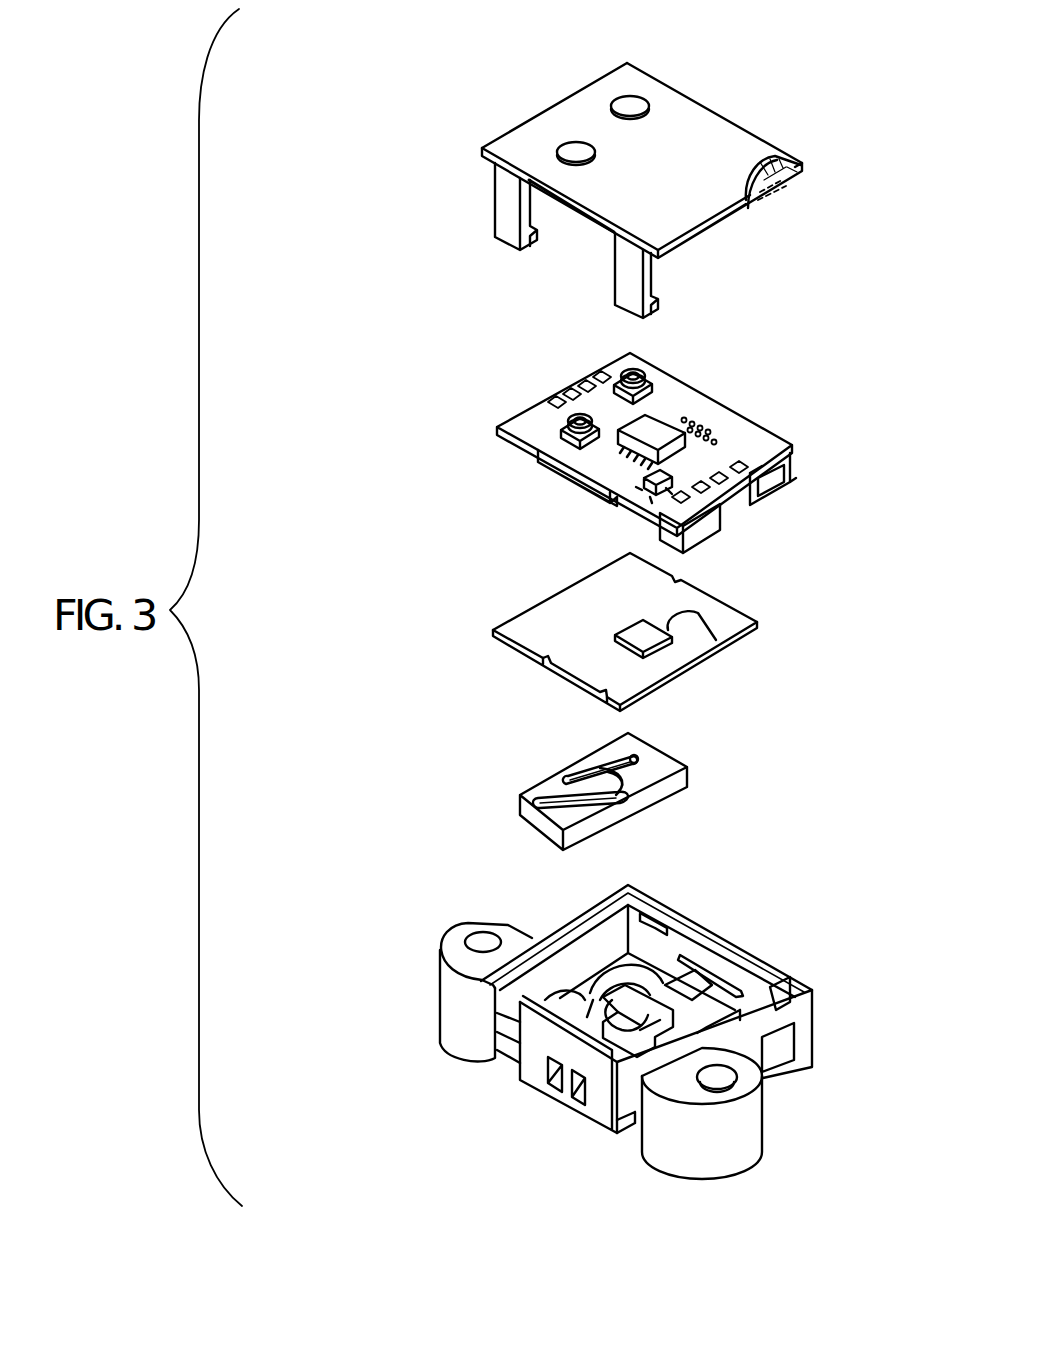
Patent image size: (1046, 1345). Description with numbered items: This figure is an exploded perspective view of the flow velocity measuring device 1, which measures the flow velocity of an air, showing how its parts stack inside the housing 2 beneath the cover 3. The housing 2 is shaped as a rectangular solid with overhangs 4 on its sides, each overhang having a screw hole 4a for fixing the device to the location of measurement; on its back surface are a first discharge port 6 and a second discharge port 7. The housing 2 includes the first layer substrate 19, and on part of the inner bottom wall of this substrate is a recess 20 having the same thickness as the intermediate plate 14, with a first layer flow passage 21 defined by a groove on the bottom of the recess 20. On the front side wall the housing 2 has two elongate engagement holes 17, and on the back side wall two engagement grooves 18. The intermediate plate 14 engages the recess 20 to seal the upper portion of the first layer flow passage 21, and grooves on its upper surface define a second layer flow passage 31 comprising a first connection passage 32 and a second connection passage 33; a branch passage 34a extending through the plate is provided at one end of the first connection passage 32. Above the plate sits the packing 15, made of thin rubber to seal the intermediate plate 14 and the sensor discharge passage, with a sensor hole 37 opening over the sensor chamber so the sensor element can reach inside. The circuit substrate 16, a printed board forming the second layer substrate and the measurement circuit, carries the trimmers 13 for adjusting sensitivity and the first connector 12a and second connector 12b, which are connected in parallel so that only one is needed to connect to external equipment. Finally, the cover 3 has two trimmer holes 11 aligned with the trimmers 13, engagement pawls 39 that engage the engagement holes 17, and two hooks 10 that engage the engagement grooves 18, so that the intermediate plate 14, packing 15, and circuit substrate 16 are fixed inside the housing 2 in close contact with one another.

The flow velocity measuring device 1 is at (324, 132).
The housing 2 is at (430, 993).
The cover 3 is at (489, 135).
The overhangs 4 is at (490, 922).
The screw holes 4a is at (470, 928).
The first discharge port 6 is at (550, 1078).
The second discharge port 7 is at (573, 1100).
The hooks 10 is at (505, 217).
The trimmer holes 11 is at (568, 140).
The first connector 12a is at (783, 483).
The second connector 12b is at (707, 537).
The trimmers 13 is at (573, 417).
The intermediate plate 14 is at (513, 787).
The packing 15 is at (503, 607).
The circuit substrate 16 is at (500, 414).
The engagement holes 17 is at (638, 910).
The engagement grooves 18 is at (517, 1043).
The first layer substrate 19 is at (705, 968).
The recess 20 is at (622, 987).
The first layer flow passage 21 is at (680, 1006).
The second layer flow passage 31 is at (558, 767).
The first connection passage 32 is at (600, 760).
The second connection passage 33 is at (640, 803).
The branch passage 34a is at (660, 753).
The sensor hole 37 is at (717, 648).
The engagement pawls 39 is at (782, 160).